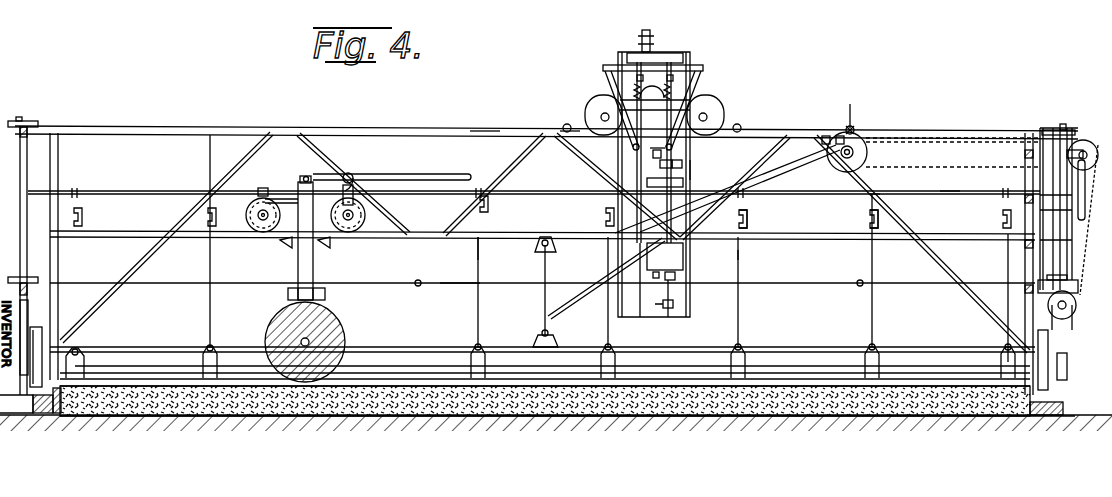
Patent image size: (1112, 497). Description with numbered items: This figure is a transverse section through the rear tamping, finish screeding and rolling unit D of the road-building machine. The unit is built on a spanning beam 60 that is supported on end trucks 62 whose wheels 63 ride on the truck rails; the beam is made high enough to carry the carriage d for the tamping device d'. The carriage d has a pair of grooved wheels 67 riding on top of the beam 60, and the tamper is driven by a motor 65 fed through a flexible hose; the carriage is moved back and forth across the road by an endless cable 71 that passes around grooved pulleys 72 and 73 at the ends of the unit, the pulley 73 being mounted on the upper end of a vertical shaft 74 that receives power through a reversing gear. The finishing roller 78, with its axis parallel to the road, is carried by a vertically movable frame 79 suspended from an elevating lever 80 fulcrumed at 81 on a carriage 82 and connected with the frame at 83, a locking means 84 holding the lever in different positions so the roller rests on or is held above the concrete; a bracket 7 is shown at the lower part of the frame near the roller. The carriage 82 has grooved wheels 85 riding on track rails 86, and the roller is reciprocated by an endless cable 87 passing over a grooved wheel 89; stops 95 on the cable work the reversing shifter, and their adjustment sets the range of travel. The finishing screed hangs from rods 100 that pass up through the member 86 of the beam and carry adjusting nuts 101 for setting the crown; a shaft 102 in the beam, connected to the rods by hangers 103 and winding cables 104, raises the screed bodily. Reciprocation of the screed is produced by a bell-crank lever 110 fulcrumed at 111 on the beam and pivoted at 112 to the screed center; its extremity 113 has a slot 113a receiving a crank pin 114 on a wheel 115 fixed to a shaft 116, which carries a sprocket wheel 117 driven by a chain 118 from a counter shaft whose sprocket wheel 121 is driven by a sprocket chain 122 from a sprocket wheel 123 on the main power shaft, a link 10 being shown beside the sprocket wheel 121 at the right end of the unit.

The bracket 7 is at (288, 292).
The link 10 is at (1086, 187).
The spanning beam 60 is at (203, 136).
The end truck 62 is at (23, 376).
The wheel 63 is at (38, 328).
The motor 65 is at (690, 255).
The grooved wheel 67 is at (724, 114).
The endless cable 71 is at (495, 131).
The grooved pulley 72 is at (8, 132).
The grooved pulley 73 is at (1072, 128).
The vertical shaft 74 is at (1068, 227).
The finishing roller 78 is at (330, 337).
The vertically movable frame 79 is at (313, 268).
The elevating lever 80 is at (345, 174).
The fulcrum 81 is at (352, 180).
The carriage 82 is at (296, 198).
The connection 83 is at (306, 176).
The locking means 84 is at (370, 176).
The grooved wheel 85 is at (263, 232).
The track rail 86 is at (496, 236).
The endless cable 87 is at (462, 285).
The grooved wheel 89 is at (1078, 288).
The stop 95 is at (418, 280).
The rod 100 is at (745, 257).
The adjusting nut 101 is at (748, 230).
The shaft 102 is at (950, 194).
The hanger 103 is at (870, 221).
The winding cable 104 is at (870, 202).
The bell-crank lever 110 is at (575, 248).
The fulcrum 111 is at (545, 240).
The pivotal connection 112 is at (543, 330).
The extremity 113 is at (826, 136).
The slot 113a is at (850, 104).
The crank pin 114 is at (853, 129).
The wheel 115 is at (870, 140).
The shaft 116 is at (868, 152).
The sprocket wheel 117 is at (830, 166).
The chain 118 is at (960, 135).
The sprocket wheel 121 is at (1087, 150).
The sprocket chain 122 is at (1089, 210).
The sprocket wheel 123 is at (1076, 310).
The tamping, finish screeding and rolling unit D is at (560, 111).
The carriage d is at (667, 107).
The tamping device d' is at (700, 166).